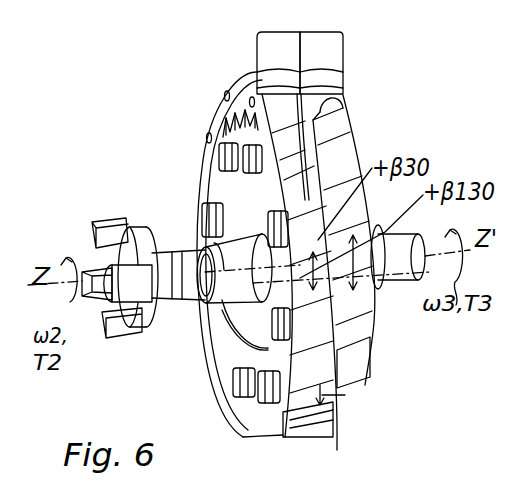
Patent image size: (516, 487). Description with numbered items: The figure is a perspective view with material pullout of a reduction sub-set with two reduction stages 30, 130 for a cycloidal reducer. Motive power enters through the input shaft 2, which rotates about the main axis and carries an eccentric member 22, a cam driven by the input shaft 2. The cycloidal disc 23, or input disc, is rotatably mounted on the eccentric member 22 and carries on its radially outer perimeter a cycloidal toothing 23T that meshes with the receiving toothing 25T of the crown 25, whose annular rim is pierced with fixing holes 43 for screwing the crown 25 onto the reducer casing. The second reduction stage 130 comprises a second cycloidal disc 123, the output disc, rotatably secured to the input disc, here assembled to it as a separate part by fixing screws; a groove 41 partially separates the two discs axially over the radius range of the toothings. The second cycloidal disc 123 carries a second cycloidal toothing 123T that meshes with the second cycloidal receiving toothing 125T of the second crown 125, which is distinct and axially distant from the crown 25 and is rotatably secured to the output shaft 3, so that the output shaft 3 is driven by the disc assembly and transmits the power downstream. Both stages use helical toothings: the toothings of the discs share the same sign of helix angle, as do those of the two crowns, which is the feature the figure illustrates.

The input shaft 2 is at (165, 264).
The output shaft 3 is at (392, 280).
The eccentric member 22 is at (300, 278).
The cycloidal disc 23 is at (250, 356).
The cycloidal toothing 23T is at (306, 366).
The crown 25 is at (228, 112).
The receiving toothing 25T is at (273, 102).
The first reduction stage 30 is at (283, 103).
The second reduction stage 130 is at (321, 63).
The groove 41 is at (336, 399).
The fixing holes 43 is at (206, 138).
The second cycloidal disc 123 is at (353, 367).
The second cycloidal toothing 123T is at (356, 396).
The second crown 125 is at (312, 80).
The second cycloidal receiving toothing 125T is at (321, 117).